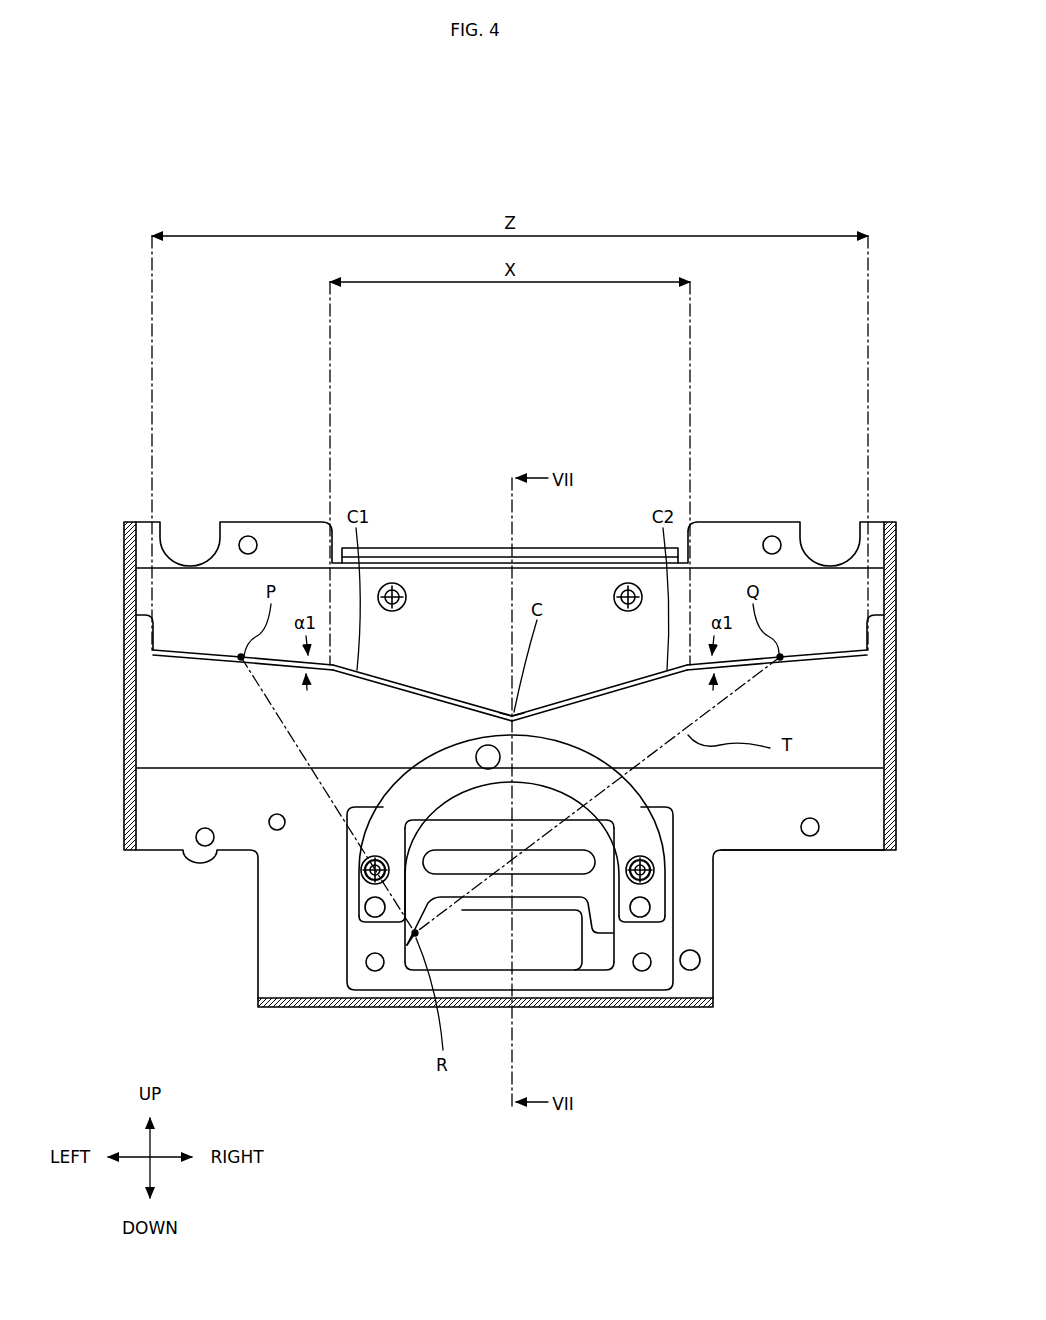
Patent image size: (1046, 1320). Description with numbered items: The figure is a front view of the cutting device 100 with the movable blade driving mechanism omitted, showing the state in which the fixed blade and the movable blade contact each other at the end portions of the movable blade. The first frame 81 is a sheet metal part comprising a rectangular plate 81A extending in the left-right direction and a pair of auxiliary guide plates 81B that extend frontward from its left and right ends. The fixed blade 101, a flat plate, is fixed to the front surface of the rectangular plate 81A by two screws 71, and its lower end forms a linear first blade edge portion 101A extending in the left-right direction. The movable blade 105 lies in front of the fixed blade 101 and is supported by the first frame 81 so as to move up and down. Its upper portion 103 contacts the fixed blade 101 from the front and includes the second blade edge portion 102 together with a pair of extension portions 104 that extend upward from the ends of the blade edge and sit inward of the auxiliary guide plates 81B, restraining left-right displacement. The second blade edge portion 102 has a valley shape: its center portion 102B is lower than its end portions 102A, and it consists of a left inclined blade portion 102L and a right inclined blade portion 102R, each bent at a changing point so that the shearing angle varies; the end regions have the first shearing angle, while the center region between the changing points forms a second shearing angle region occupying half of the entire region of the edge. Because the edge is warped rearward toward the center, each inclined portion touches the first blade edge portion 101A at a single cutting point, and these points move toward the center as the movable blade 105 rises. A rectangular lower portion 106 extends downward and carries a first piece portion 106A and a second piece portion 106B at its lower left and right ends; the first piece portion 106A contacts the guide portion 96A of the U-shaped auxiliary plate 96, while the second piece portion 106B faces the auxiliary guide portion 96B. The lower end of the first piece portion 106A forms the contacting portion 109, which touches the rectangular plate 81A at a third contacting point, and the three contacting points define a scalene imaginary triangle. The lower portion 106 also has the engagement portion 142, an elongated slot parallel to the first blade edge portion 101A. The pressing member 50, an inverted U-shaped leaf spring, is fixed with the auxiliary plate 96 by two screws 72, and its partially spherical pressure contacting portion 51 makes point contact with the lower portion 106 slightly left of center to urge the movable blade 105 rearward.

The cutting device 100 is at (757, 372).
The fixed blade 101 is at (287, 560).
The first blade edge portion 101A is at (555, 665).
The second blade edge portion 102 is at (405, 378).
The left inclined blade portion 102L is at (356, 665).
The right inclined blade portion 102R is at (668, 665).
The end portions 102A is at (237, 646).
The center portion 102B is at (485, 684).
The upper portion 103 is at (815, 705).
The extension portions 104 is at (140, 640).
The movable blade 105 is at (198, 708).
The lower portion 106 is at (533, 883).
The first piece portion 106A is at (363, 915).
The second piece portion 106B is at (718, 855).
The contacting portion 109 is at (420, 940).
The engagement portion 142 is at (483, 858).
The pressing member 50 is at (652, 788).
The pressure contacting portion 51 is at (476, 760).
The screws 71 is at (396, 584).
The screws 72 is at (360, 872).
The first frame 81 is at (846, 862).
The rectangular plate 81A is at (843, 815).
The auxiliary guide plates 81B is at (132, 584).
The auxiliary plate 96 is at (340, 912).
The guide portion 96A is at (420, 928).
The auxiliary guide portion 96B is at (597, 930).